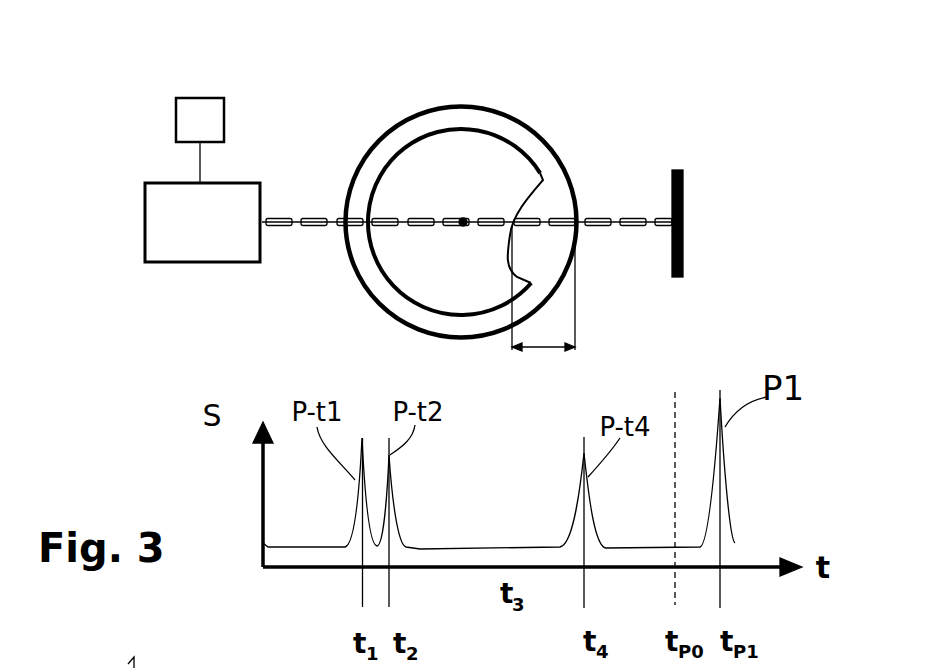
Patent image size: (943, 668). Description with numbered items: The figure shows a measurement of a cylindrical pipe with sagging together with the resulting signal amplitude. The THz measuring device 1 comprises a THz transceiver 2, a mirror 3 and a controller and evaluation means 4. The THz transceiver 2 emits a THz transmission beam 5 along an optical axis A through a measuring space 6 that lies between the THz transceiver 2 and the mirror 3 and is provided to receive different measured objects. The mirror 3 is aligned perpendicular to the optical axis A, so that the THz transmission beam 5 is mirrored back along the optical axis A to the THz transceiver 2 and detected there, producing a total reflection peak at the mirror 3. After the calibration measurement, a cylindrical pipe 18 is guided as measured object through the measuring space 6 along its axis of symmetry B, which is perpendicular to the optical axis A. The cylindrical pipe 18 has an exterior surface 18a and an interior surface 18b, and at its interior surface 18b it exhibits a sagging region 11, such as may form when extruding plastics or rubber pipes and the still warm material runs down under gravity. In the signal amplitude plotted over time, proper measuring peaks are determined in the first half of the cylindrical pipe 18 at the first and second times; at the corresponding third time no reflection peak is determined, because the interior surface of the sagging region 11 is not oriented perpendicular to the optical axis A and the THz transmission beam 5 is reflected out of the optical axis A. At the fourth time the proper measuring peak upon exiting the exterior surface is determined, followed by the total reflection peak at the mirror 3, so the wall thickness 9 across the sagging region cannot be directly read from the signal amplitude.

The THz measuring device 1 is at (142, 100).
The THz transceiver 2 is at (152, 268).
The mirror 3 is at (683, 190).
The controller and evaluation means 4 is at (224, 118).
The THz transmission beam 5 is at (279, 218).
The measuring space 6 is at (625, 187).
The rotor disc 9 is at (472, 251).
The sagging region 11 is at (533, 205).
The cylindrical pipe 18 is at (436, 176).
The exterior surface of the cylindrical pipe 18a is at (427, 110).
The interior surface of the cylindrical pipe 18b is at (405, 160).
The optical axis A is at (302, 230).
The axis of symmetry B is at (463, 217).